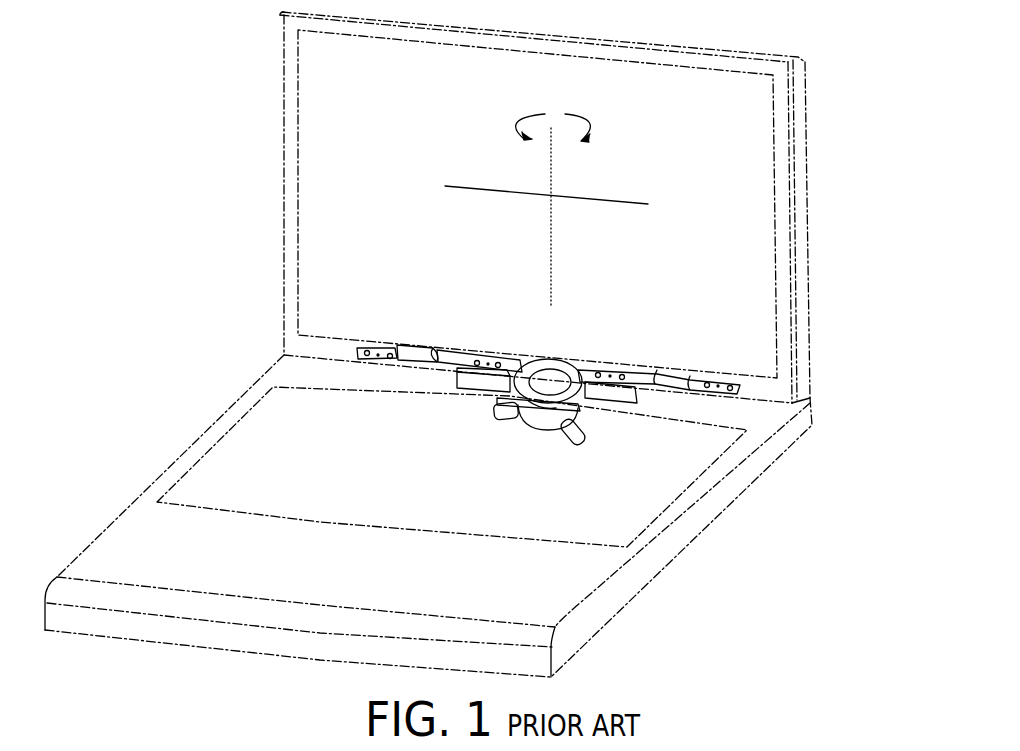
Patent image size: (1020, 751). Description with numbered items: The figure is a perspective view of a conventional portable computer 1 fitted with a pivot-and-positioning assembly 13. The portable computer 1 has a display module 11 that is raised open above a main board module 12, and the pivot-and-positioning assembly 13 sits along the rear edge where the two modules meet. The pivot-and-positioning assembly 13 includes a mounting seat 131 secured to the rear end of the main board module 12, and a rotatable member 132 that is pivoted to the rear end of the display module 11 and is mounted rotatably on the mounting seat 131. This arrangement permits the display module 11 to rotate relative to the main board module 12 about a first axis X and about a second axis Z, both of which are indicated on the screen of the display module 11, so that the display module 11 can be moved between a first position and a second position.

The portable computer 1 is at (252, 251).
The display module 11 is at (804, 298).
The main board module 12 is at (636, 578).
The pivot-and-positioning assembly 13 is at (583, 349).
The mounting seat 131 is at (605, 422).
The rotatable member 132 is at (543, 398).